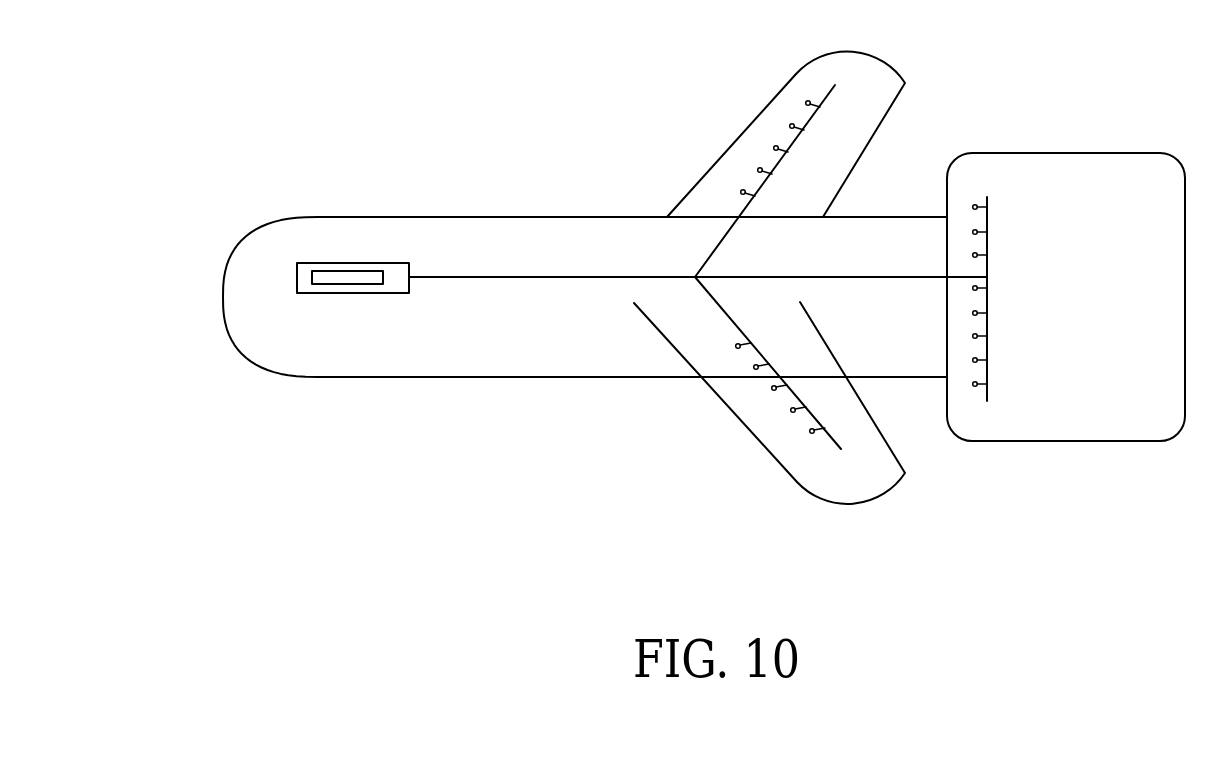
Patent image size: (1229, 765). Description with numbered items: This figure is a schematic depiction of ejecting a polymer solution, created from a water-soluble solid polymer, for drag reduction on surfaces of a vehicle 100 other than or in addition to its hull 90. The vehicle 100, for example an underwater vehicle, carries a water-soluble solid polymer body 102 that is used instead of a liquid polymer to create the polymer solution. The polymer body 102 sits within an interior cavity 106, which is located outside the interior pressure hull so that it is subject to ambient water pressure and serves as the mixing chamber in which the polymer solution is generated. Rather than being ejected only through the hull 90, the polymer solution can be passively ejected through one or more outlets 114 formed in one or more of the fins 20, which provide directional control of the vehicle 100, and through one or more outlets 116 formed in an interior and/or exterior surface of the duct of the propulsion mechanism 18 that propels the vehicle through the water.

The vehicle 100 is at (458, 153).
The hull 90 is at (444, 399).
The water-soluble solid polymer body 102 is at (325, 270).
The interior cavity 106 is at (377, 263).
The control fins 20 is at (886, 80).
The outlets 114 is at (792, 124).
The propulsion mechanism 18 is at (1089, 477).
The outlets 116 is at (975, 205).